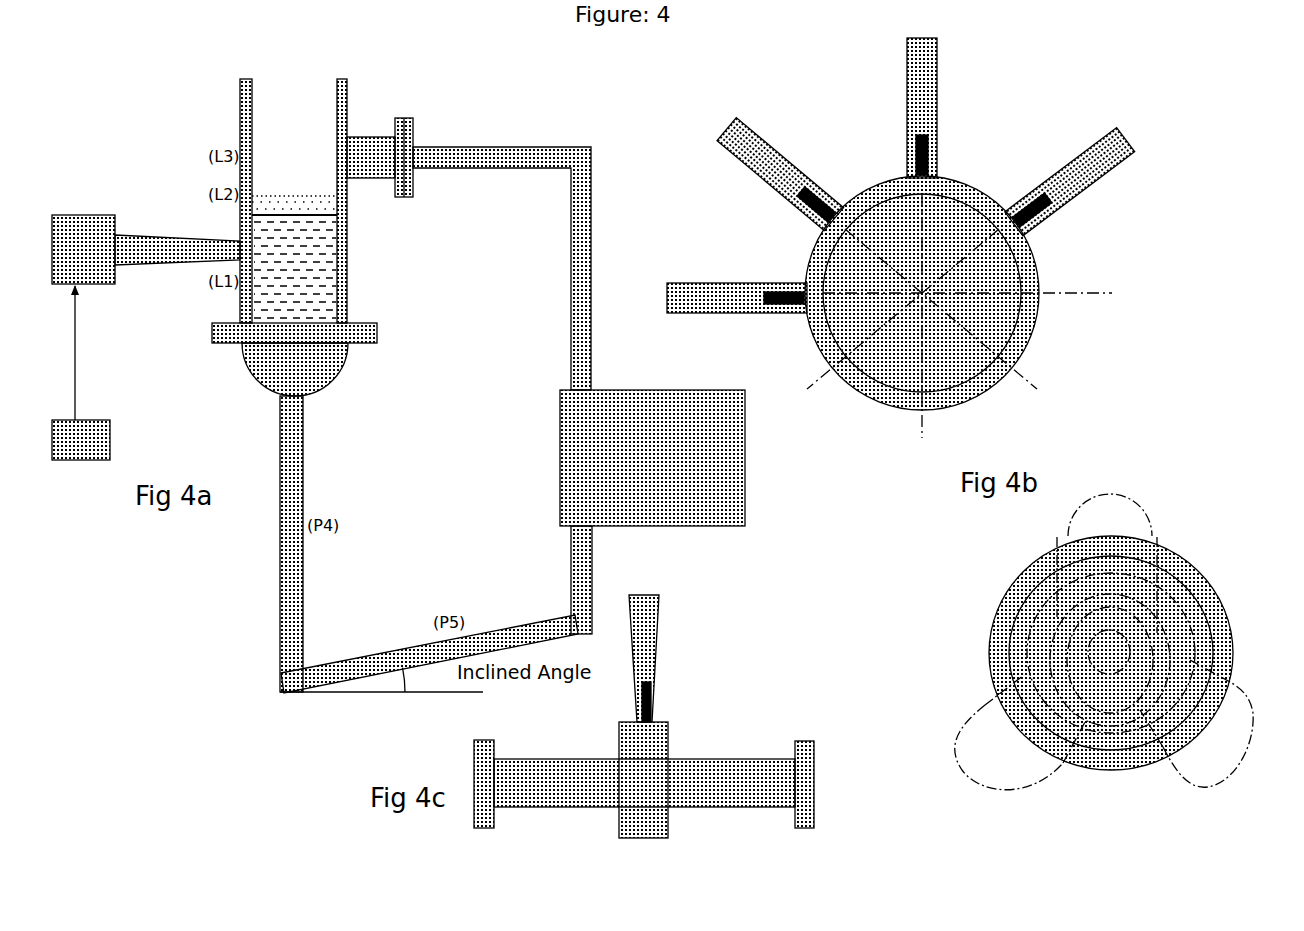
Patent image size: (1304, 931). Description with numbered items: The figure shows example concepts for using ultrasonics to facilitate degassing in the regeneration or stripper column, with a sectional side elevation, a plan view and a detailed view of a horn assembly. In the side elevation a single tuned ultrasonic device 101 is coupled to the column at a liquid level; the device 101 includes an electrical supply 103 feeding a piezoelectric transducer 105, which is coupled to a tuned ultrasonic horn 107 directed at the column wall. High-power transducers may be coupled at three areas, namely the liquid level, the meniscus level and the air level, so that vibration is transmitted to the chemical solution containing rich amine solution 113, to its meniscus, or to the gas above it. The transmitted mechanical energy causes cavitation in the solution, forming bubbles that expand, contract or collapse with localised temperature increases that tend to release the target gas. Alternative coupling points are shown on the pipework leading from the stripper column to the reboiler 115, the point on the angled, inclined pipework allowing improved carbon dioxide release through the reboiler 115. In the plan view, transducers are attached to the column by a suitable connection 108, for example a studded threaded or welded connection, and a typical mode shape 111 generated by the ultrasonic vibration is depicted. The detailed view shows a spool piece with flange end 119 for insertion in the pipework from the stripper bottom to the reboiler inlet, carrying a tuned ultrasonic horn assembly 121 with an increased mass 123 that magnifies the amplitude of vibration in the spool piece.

In FIG. 4A, the tuned ultrasonic device 101 is at (239, 242).
In FIG. 4A, the electrical supply 103 is at (81, 373).
In FIG. 4A, the piezoelectric transducer 105 is at (107, 213).
In FIG. 4A, the tuned ultrasonic horn 107 is at (180, 267).
In FIG. 4B, the connection 108 is at (942, 166).
In FIG. 4B, the mode shape 111 is at (1000, 700).
In FIG. 4A, the rich amine solution 113 is at (320, 293).
In FIG. 4A, the reboiler 115 is at (512, 420).
In FIG. 4C, the spool piece with flange end 119 is at (805, 780).
In FIG. 4C, the tuned ultrasonic horn assembly 121 is at (660, 654).
In FIG. 4C, the increased mass 123 is at (673, 731).